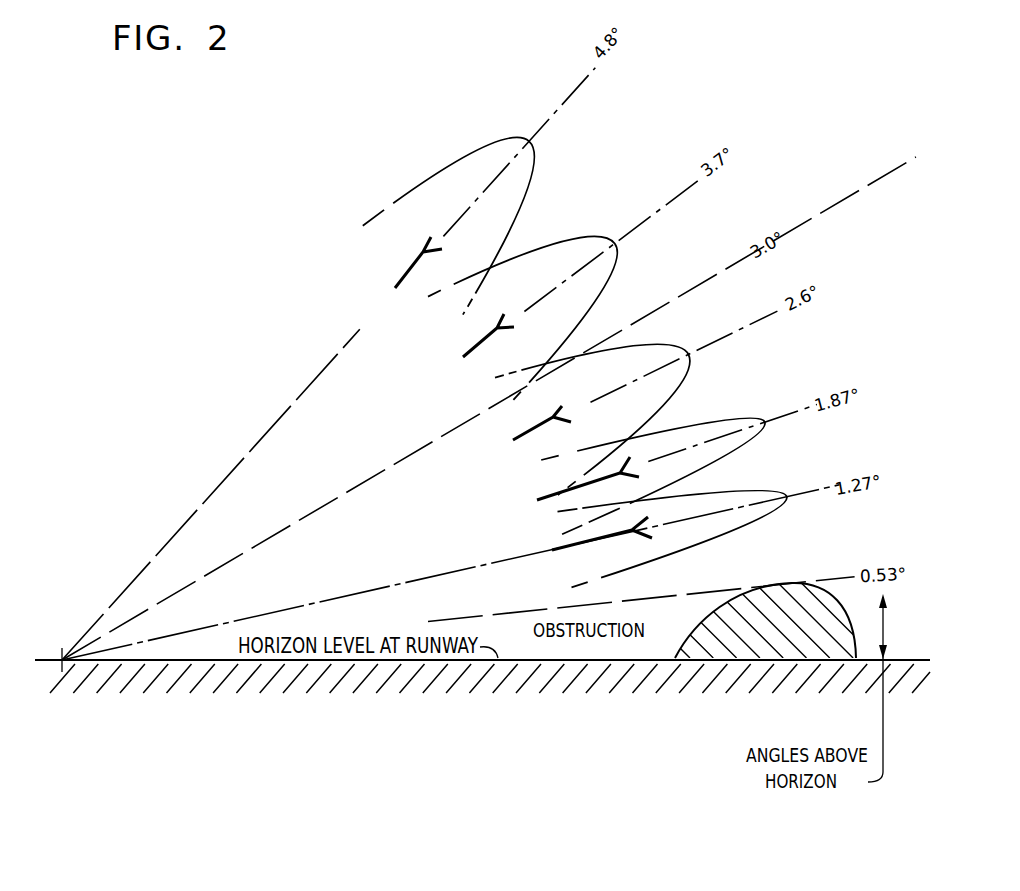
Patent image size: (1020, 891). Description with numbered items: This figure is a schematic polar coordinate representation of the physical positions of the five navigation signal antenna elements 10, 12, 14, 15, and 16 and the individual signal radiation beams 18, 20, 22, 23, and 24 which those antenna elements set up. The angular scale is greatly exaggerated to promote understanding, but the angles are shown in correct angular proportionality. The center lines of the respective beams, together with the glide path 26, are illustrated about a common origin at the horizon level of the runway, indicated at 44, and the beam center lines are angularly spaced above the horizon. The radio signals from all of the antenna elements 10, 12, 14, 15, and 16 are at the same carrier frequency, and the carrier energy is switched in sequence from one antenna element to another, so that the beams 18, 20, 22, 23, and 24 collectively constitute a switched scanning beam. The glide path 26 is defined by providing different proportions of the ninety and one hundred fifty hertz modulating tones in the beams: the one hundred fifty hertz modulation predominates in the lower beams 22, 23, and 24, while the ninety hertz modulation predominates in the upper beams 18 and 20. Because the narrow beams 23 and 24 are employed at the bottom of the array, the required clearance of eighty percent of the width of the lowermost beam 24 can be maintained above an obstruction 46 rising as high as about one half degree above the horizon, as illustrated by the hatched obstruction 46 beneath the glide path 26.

The navigation signal antenna element 10 is at (421, 250).
The navigation signal antenna element 12 is at (496, 330).
The navigation signal antenna element 14 is at (560, 414).
The navigation signal antenna element 15 is at (627, 478).
The navigation signal antenna element 16 is at (641, 540).
The signal radiation beam 18 is at (504, 134).
The signal radiation beam 20 is at (596, 231).
The signal radiation beam 22 is at (674, 343).
The signal radiation beam 23 is at (738, 418).
The signal radiation beam 24 is at (766, 494).
The glide path 26 is at (898, 172).
The common origin at horizon level of runway 44 is at (60, 658).
The obstruction 46 is at (700, 626).